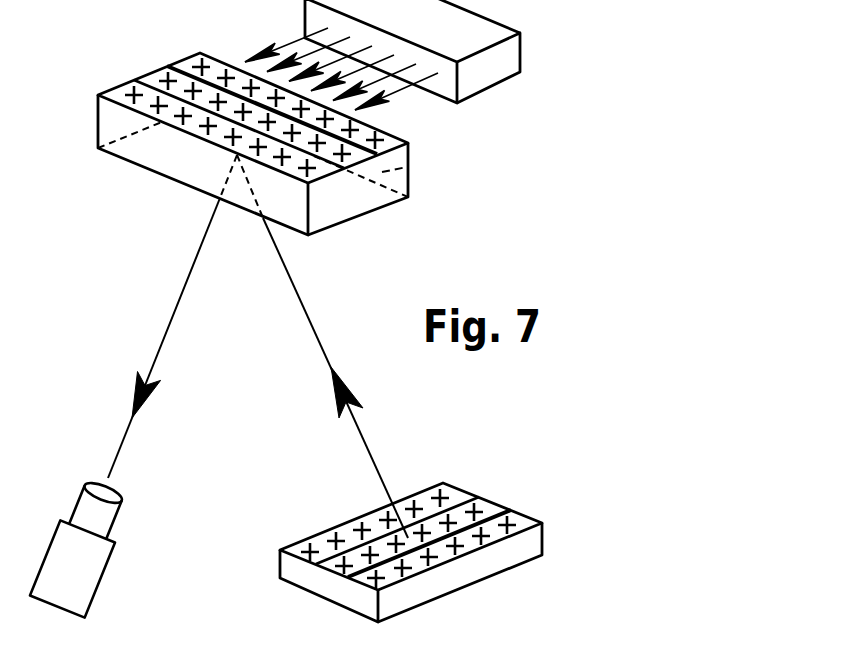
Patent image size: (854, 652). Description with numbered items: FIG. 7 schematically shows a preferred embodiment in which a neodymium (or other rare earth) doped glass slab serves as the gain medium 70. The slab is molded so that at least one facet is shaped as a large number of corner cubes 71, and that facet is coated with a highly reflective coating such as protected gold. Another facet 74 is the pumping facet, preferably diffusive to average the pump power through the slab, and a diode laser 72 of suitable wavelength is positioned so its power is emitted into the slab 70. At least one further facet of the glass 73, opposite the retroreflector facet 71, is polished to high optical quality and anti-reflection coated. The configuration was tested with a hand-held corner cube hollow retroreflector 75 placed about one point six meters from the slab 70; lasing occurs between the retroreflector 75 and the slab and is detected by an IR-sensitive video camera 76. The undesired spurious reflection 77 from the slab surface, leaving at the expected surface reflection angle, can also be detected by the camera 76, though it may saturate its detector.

The glass slab of gain medium 70 is at (408, 182).
The corner cubes 71 is at (153, 78).
The diode laser 72 is at (495, 84).
The facet of the glass 73 is at (193, 160).
The pumping facet 74 is at (408, 166).
The corner cube hollow retroreflector 75 is at (478, 585).
The video camera 76 is at (102, 587).
The spurious reflection 77 is at (160, 345).